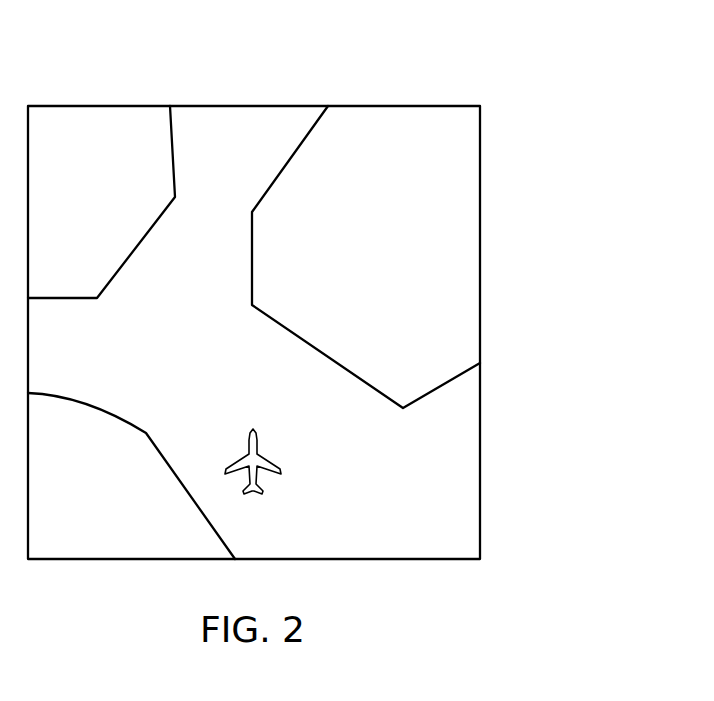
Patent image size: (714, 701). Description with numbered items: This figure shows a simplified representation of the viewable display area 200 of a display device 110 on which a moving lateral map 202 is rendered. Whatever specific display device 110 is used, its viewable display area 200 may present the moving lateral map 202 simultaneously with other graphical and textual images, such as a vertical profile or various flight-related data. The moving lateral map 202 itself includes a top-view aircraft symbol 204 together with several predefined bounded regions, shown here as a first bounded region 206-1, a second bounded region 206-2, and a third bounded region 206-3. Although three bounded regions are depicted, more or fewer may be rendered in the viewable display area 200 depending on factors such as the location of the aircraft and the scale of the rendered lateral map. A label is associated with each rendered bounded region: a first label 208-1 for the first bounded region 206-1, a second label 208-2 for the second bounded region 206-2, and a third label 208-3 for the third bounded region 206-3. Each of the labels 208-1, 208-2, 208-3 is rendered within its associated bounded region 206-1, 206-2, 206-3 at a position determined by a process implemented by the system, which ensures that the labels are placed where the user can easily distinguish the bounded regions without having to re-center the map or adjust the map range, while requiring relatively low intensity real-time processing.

The display device 110 is at (578, 93).
The viewable display area 200 is at (263, 109).
The moving lateral map 202 is at (467, 495).
The top-view aircraft symbol 204 is at (258, 447).
The first bounded region 206-1 is at (135, 191).
The second bounded region 206-2 is at (415, 228).
The third bounded region 206-3 is at (137, 506).
The first label 208-1 is at (99, 252).
The second label 208-2 is at (318, 328).
The third label 208-3 is at (135, 446).